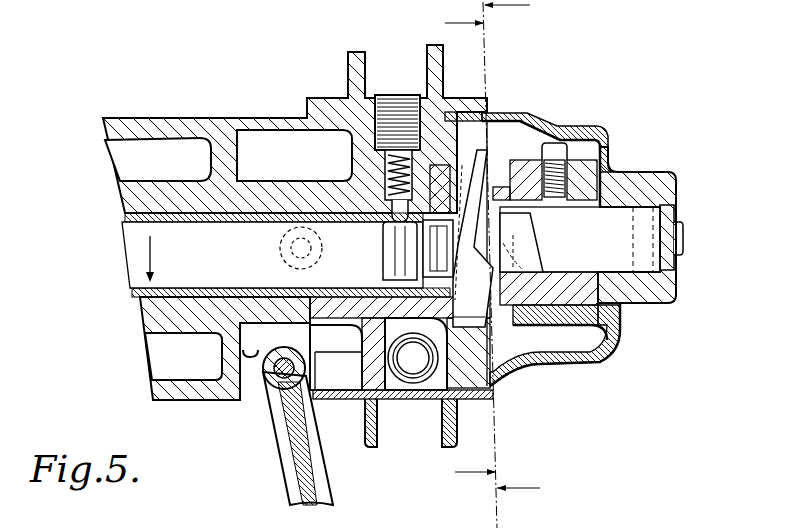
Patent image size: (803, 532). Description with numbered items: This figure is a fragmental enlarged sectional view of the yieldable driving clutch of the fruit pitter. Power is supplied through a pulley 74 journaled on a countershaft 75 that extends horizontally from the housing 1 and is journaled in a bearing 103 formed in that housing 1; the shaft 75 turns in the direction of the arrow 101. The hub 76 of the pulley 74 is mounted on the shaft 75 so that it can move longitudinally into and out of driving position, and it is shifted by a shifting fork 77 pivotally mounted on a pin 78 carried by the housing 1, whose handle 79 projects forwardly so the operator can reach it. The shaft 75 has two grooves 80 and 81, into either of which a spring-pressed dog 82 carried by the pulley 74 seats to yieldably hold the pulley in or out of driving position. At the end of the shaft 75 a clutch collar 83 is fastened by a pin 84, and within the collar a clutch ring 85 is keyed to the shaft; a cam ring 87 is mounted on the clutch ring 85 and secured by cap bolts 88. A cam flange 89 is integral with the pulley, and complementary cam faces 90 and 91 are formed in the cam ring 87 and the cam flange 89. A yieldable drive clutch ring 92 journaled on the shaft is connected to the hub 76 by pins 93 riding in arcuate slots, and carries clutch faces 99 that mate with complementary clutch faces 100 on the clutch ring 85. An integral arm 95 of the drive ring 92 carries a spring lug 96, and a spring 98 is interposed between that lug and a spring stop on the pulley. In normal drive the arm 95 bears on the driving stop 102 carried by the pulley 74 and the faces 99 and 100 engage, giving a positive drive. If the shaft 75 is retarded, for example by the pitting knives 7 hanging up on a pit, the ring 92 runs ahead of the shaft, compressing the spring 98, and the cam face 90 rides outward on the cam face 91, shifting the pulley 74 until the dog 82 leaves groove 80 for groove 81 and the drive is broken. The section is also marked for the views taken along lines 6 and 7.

The housing 1 is at (194, 117).
The bearing 103 is at (158, 159).
The hub 76 is at (337, 181).
The pulley 74 is at (400, 95).
The yieldable drive clutch ring 92 is at (445, 130).
The cam flange 89 is at (442, 178).
The pins 93 is at (467, 215).
The clutch faces 99 is at (478, 222).
The cap bolts 88 is at (555, 145).
The clutch collar 83 is at (598, 128).
The pin 84 is at (647, 178).
The clutch ring 85 is at (580, 200).
The complementary clutch faces 100 is at (503, 243).
The cam face 91 is at (520, 254).
The countershaft 75 is at (178, 277).
The arrow 101 is at (152, 247).
The shifting fork 77 is at (282, 264).
The spring-pressed dog 82 is at (383, 224).
The groove 81 is at (423, 247).
The groove 80 is at (427, 256).
The cam face 90 is at (477, 263).
The arm 95 is at (447, 338).
The driving stop 102 is at (393, 338).
The cam ring 87 is at (583, 318).
The pin 78 is at (268, 382).
The handle 79 is at (287, 470).
The spring lug 96 is at (417, 368).
The spring 98 is at (403, 380).
The section line 6- 6 is at (519, 248).
The pitting knives 7 is at (470, 257).